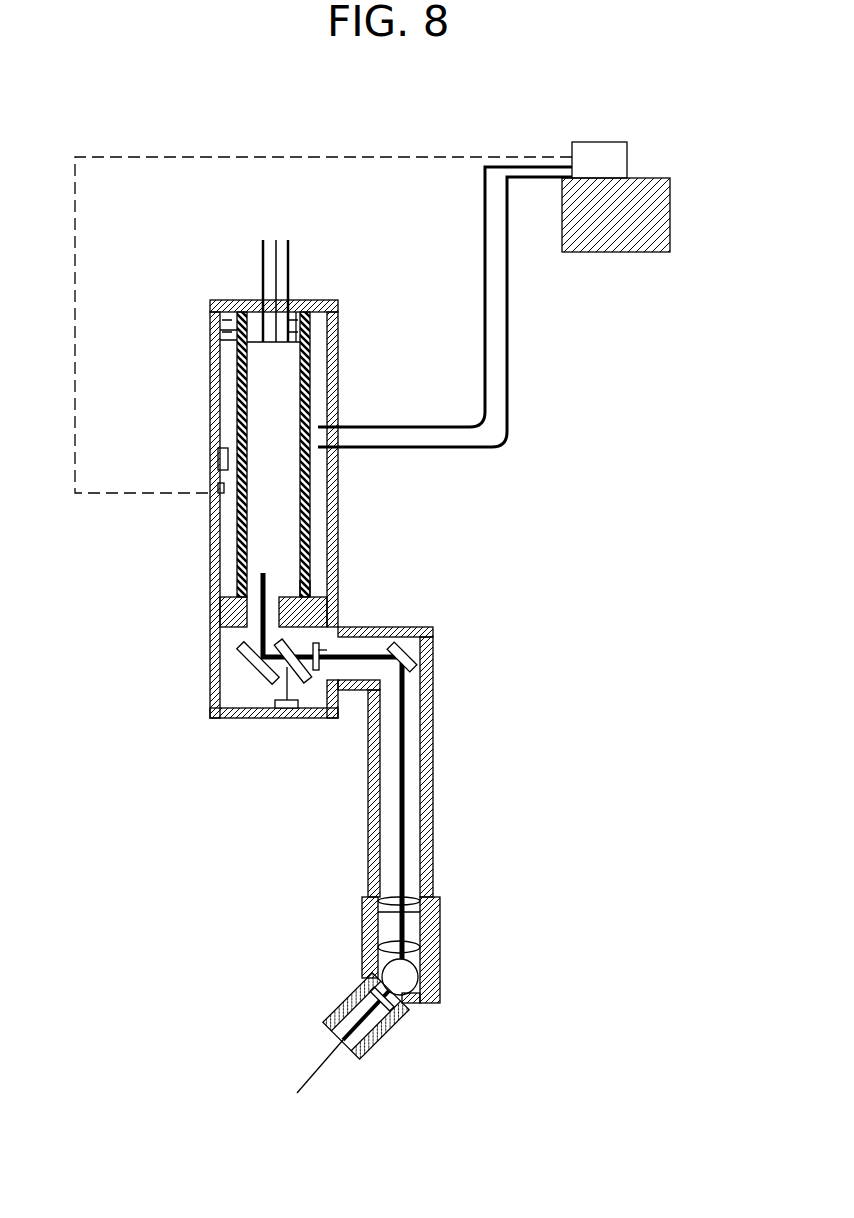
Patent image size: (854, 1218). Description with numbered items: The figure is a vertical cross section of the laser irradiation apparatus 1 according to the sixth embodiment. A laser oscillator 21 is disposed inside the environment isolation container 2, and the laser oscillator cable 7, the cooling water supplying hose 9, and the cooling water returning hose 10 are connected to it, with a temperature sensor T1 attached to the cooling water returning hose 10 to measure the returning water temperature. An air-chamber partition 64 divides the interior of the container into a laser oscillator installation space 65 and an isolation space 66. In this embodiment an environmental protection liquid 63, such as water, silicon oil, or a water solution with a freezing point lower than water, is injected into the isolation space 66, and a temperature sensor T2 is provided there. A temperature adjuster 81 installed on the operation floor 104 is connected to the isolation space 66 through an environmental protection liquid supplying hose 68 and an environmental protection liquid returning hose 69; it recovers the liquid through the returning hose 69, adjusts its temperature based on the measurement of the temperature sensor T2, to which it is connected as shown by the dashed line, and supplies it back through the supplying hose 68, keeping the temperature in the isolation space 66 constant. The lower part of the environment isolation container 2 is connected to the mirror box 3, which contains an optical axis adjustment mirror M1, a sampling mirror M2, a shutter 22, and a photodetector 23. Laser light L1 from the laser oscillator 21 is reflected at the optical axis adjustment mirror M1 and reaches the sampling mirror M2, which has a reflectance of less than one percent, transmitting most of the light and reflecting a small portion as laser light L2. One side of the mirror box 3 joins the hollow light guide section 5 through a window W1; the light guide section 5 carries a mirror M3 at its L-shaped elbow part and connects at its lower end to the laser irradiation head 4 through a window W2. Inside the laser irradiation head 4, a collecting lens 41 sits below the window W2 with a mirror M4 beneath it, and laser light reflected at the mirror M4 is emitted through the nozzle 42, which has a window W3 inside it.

The laser irradiation apparatus 1 is at (95, 112).
The environment isolation container 2 is at (340, 365).
The mirror box 3 is at (210, 653).
The laser irradiation head 4 is at (433, 925).
The light guide section 5 is at (433, 767).
The laser oscillator cable 7 is at (262, 243).
The cooling water supplying hose 9 is at (300, 238).
The cooling water returning hose 10 is at (296, 300).
The laser oscillator 21 is at (287, 427).
The shutter 22 is at (325, 718).
The photodetector 23 is at (272, 728).
The collecting lens 41 is at (388, 930).
The nozzle 42 is at (343, 998).
The environmental protection liquid 63 is at (230, 403).
The air-chamber partition 64 is at (238, 447).
The laser oscillator installation space 65 is at (302, 583).
The isolation space 66 is at (218, 370).
The environmental protection liquid supplying hose 68 is at (507, 390).
The environmental protection liquid returning hose 69 is at (485, 385).
The temperature adjuster 81 is at (598, 142).
The operation floor 104 is at (648, 178).
The laser light L1 is at (258, 592).
The reflected laser light L2 is at (220, 723).
The optical axis adjustment mirror M1 is at (240, 662).
The sampling mirror M2 is at (292, 640).
The mirror M3 is at (412, 648).
The mirror M4 is at (412, 973).
The temperature sensor T1 is at (313, 300).
The temperature sensor T2 is at (210, 450).
The window W1 is at (320, 658).
The window W2 is at (432, 868).
The window W3 is at (393, 1037).